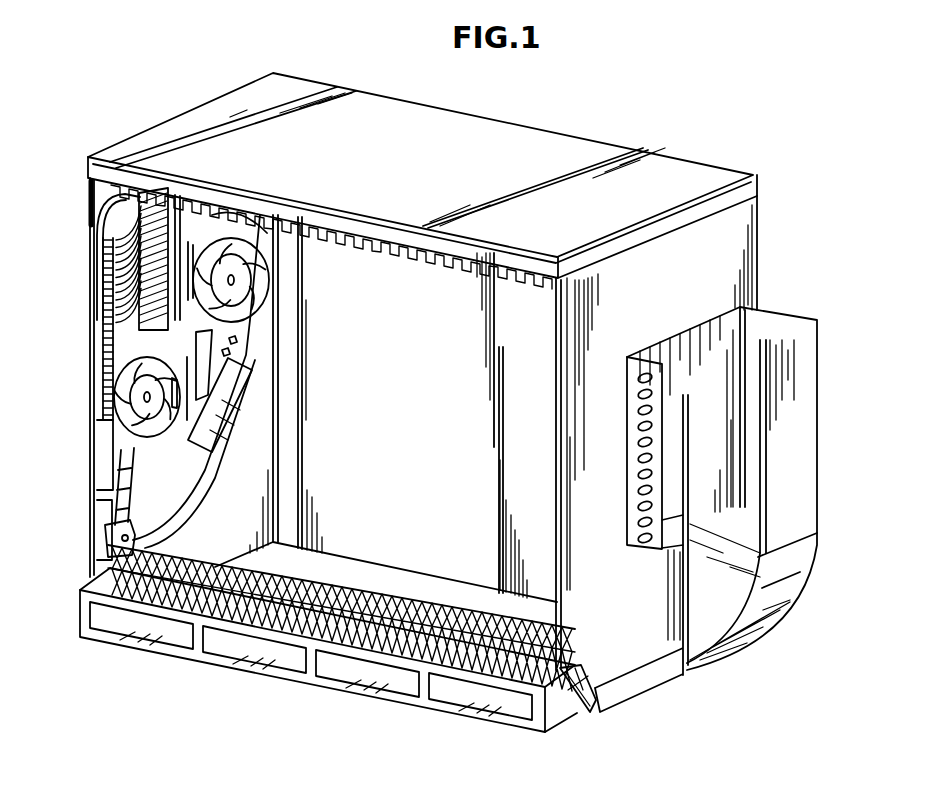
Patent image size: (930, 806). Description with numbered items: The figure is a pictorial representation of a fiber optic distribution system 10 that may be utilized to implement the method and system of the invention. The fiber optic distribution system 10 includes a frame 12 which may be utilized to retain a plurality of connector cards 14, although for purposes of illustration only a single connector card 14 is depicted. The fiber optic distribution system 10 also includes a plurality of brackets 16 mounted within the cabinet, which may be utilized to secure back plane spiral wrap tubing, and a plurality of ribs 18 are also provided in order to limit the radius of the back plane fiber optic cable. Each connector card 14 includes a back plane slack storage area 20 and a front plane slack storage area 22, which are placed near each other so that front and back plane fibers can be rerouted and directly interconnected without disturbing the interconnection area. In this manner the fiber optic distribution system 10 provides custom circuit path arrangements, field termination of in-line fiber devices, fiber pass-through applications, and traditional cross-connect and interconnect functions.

The fiber optic distribution system 10 is at (158, 103).
The frame 12 is at (680, 157).
The connector card 14 is at (98, 357).
The brackets 16 is at (391, 592).
The ribs 18 is at (566, 692).
The back plane slack storage area 20 is at (245, 275).
The front plane slack storage area 22 is at (137, 413).